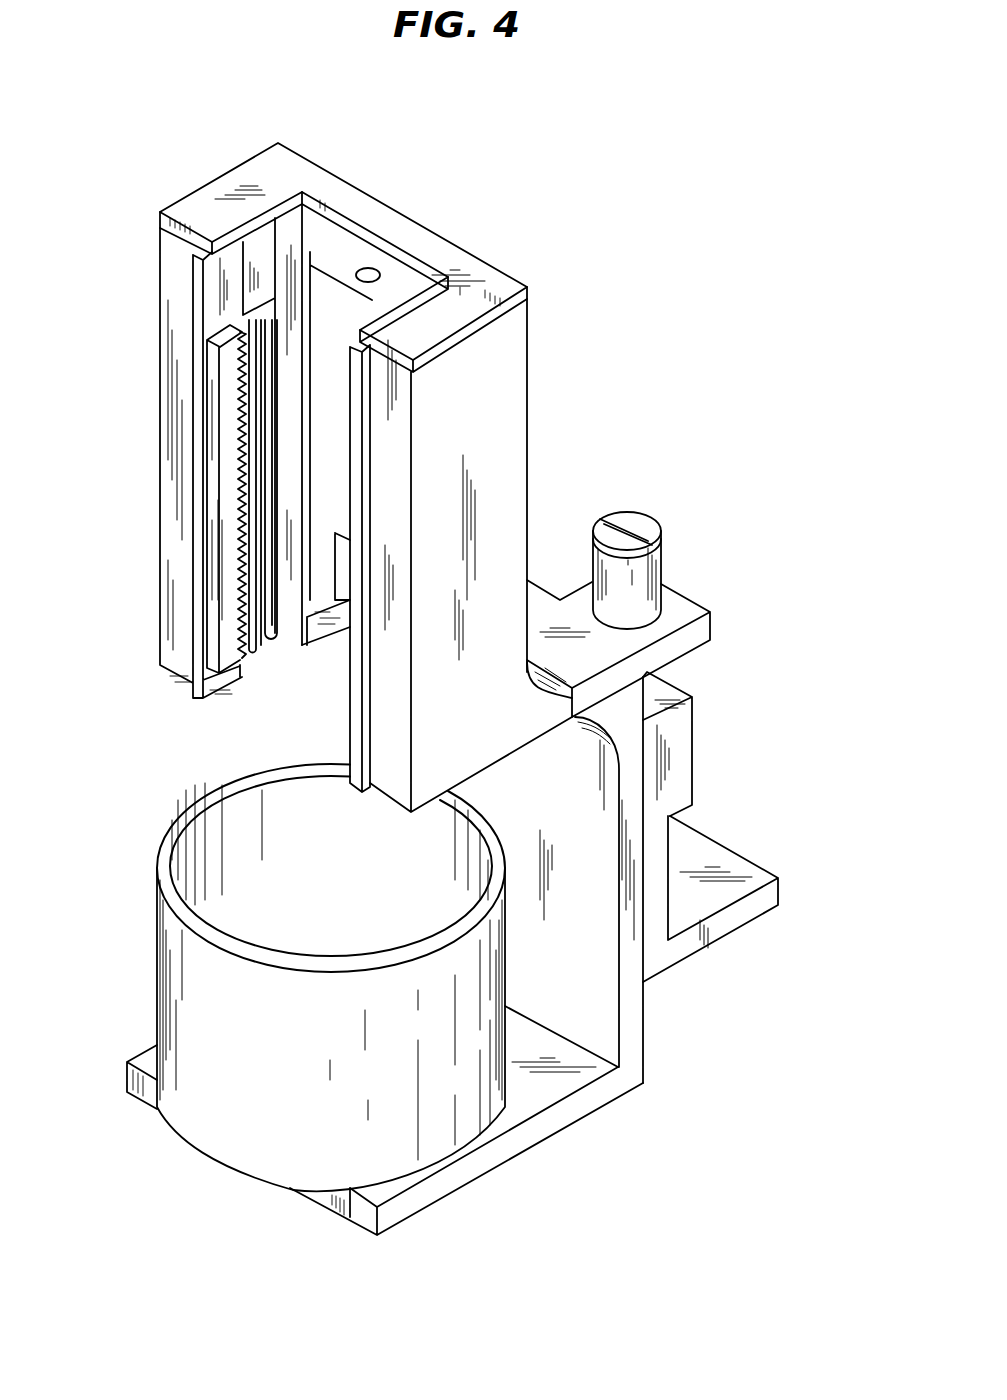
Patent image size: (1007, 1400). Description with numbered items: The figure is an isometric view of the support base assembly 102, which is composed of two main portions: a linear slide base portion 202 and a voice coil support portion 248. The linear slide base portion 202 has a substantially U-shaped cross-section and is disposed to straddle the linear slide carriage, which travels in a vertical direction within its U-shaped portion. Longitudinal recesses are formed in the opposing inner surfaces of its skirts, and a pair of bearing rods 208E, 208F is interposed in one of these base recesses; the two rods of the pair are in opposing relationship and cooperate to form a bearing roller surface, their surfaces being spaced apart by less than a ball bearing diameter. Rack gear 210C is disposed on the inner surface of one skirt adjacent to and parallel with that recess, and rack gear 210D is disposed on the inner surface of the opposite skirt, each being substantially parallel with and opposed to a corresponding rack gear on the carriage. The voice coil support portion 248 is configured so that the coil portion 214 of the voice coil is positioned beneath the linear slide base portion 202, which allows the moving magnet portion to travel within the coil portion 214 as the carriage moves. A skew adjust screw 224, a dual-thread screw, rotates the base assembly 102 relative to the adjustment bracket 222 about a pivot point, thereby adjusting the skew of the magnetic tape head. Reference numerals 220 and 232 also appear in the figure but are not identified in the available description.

The support base assembly 102 is at (772, 1146).
The linear slide base portion 202 is at (141, 549).
The bearing rod 208E is at (275, 655).
The bearing rod 208F is at (249, 657).
The rack gear 210C is at (213, 431).
The rack gear 210D is at (357, 408).
The coil portion 214 is at (352, 1103).
The frame 220 is at (531, 292).
The adjustment bracket 222 is at (780, 884).
The skew adjust screw 224 is at (665, 568).
The hole 232 is at (350, 303).
The voice coil support portion 248 is at (141, 885).